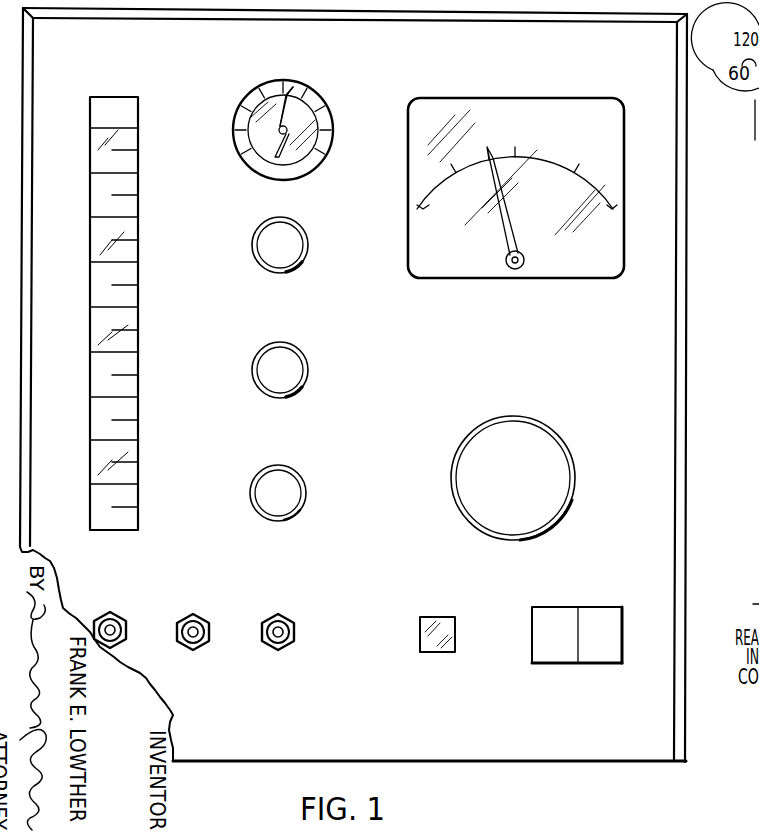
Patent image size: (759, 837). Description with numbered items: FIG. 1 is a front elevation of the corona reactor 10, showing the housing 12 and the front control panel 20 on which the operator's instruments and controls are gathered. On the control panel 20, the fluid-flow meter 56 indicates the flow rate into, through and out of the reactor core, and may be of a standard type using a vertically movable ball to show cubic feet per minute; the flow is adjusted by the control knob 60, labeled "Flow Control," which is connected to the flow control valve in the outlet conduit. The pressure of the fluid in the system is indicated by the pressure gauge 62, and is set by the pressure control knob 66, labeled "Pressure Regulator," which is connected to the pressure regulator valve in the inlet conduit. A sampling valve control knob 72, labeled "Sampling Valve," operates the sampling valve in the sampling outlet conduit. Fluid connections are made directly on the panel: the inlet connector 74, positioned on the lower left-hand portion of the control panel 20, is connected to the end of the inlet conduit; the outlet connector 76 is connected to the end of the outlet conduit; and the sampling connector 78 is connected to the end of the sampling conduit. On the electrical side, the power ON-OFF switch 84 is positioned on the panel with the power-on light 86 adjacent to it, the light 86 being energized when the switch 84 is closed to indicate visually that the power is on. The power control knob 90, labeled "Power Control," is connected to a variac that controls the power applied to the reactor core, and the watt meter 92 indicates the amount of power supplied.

The corona reactor 10 is at (692, 360).
The housing 12 is at (660, 423).
The control panel 20 is at (415, 371).
The fluid-flow meter 56 is at (128, 163).
The control knob 60 is at (301, 366).
The pressure gauge 62 is at (253, 162).
The pressure control knob 66 is at (302, 243).
The sampling valve control knob 72 is at (300, 489).
The inlet connector 74 is at (113, 640).
The outlet connector 76 is at (297, 632).
The sampling connector 78 is at (211, 633).
The power ON-OFF switch 84 is at (610, 608).
The power-on light 86 is at (445, 617).
The power control knob 90 is at (557, 455).
The watt meter 92 is at (536, 107).